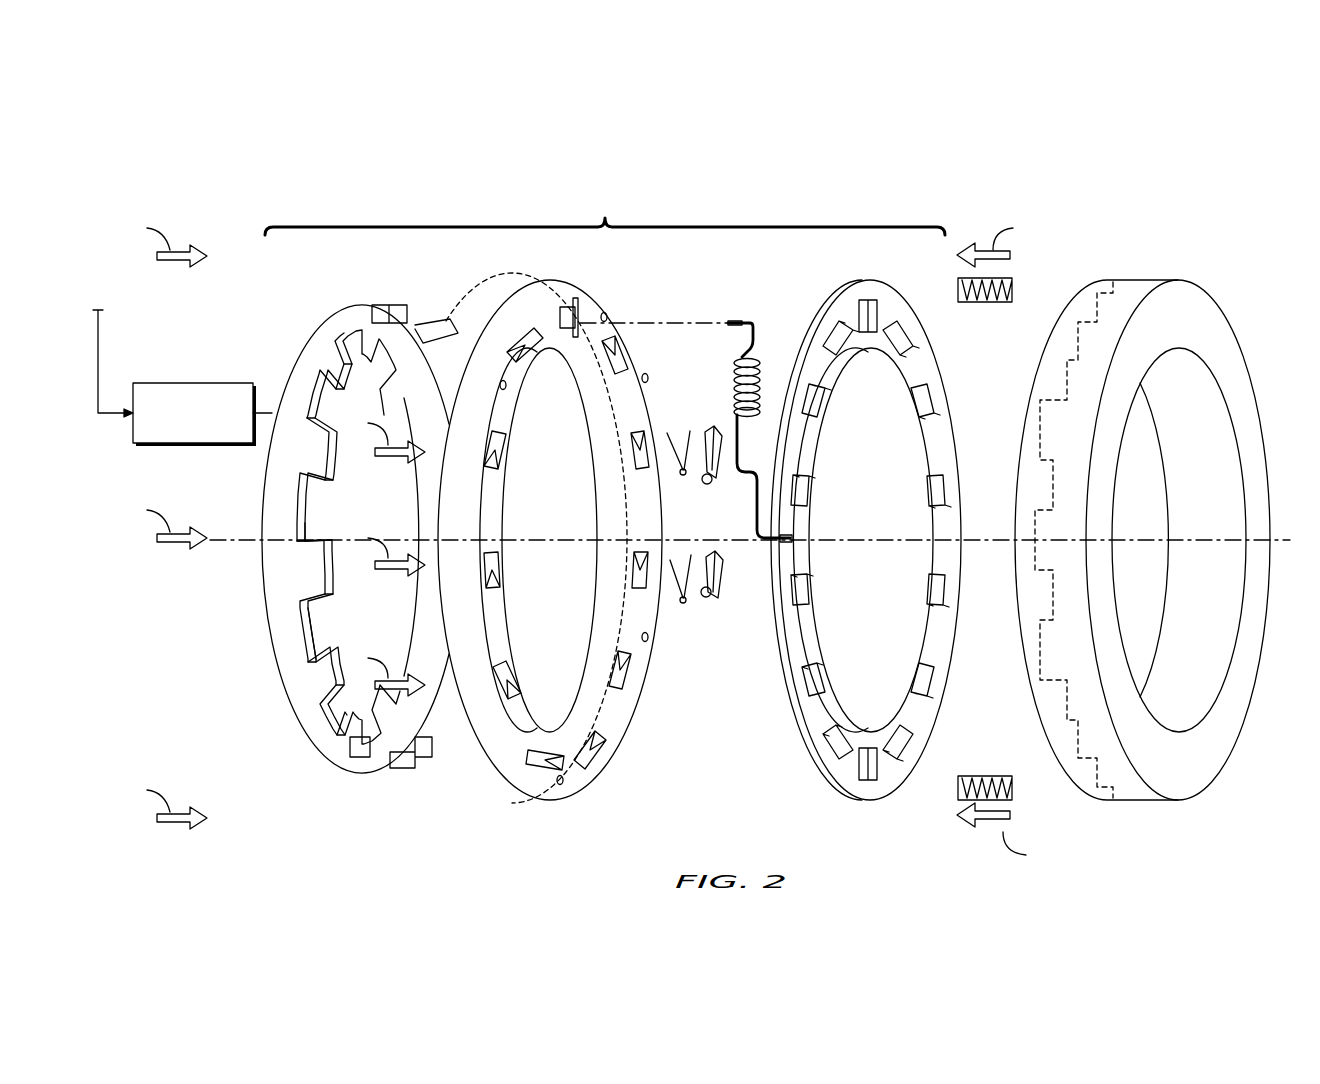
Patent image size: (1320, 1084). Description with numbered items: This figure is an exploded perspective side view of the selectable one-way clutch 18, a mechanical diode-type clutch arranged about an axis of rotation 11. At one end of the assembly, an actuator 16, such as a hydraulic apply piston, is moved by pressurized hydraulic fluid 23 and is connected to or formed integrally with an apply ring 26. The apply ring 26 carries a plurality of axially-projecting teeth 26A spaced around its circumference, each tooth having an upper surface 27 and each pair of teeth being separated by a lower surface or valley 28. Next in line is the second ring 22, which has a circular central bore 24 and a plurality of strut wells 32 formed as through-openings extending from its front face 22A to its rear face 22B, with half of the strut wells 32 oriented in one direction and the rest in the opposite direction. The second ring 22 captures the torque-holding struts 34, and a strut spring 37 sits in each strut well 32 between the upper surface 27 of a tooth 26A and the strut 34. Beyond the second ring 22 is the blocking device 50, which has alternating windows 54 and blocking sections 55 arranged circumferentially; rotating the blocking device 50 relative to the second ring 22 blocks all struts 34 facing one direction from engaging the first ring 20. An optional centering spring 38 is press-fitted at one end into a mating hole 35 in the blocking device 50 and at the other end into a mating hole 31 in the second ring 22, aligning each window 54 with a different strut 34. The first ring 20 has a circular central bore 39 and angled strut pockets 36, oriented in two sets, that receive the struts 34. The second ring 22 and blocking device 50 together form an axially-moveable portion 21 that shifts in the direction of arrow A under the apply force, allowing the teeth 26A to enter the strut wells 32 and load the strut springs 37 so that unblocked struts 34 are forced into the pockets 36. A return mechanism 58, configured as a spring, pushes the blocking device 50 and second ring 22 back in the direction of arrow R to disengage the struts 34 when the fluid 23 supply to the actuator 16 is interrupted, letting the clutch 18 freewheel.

The axis of rotation 11 is at (895, 548).
The actuator 16 is at (193, 383).
The selectable one-way clutch 18 is at (691, 495).
The first ring 20 is at (1150, 571).
The axially-moveable portion 21 is at (634, 537).
The second ring 22 is at (563, 563).
The front face 22A is at (590, 297).
The rear face 22B is at (490, 290).
The pressurized hydraulic fluid 23 is at (100, 338).
The central bore 24 is at (587, 708).
The apply ring 26 is at (335, 578).
The axially-projecting teeth 26A is at (325, 690).
The upper surface 27 is at (348, 712).
The lower surface or valley 28 is at (302, 622).
The mating hole 31 is at (608, 318).
The strut wells 32 is at (492, 580).
The struts 34 is at (713, 480).
The mating hole 35 is at (803, 420).
The angled strut pockets 36 is at (1100, 357).
The strut spring 37 is at (667, 440).
The centering spring 38 is at (762, 368).
The central bore 39 is at (1195, 665).
The blocking device 50 is at (883, 558).
The windows 54 is at (905, 335).
The blocking sections 55 is at (920, 355).
The return mechanism 58 is at (1012, 290).